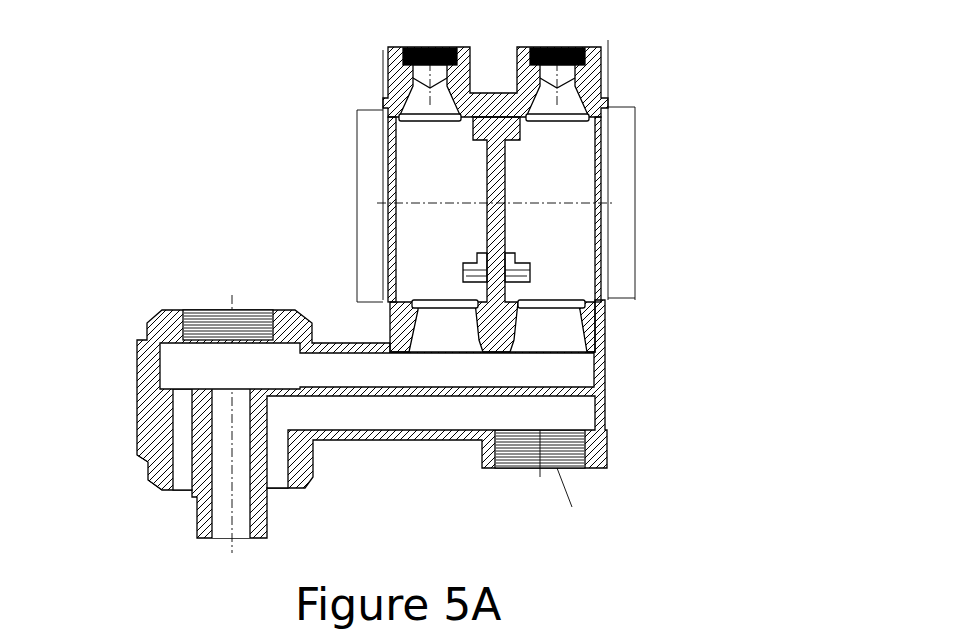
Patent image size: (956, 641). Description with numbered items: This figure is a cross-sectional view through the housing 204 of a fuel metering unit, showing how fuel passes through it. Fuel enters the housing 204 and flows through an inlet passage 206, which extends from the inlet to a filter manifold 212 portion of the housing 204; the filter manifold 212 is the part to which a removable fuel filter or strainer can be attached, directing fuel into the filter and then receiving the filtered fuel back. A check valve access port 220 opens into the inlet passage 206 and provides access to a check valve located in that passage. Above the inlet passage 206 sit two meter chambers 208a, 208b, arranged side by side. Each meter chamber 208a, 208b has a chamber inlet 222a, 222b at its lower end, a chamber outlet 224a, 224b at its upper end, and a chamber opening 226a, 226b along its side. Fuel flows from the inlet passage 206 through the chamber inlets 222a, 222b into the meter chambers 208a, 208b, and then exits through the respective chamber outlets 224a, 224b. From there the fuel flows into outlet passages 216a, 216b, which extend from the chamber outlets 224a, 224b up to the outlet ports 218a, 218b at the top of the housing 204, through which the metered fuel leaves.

The housing 204 is at (597, 388).
The inlet passage 206 is at (214, 377).
The meter chamber 208a is at (572, 172).
The meter chamber 208b is at (470, 176).
The filter manifold 212 is at (156, 423).
The outlet passage 216a is at (565, 81).
The outlet passage 216b is at (437, 92).
The outlet port 218a is at (552, 46).
The outlet port 218b is at (423, 46).
The check valve access port 220 is at (212, 313).
The chamber inlet 222a is at (560, 300).
The chamber inlet 222b is at (397, 318).
The chamber outlet 224a is at (576, 123).
The chamber outlet 224b is at (425, 128).
The chamber opening 226a is at (618, 208).
The chamber opening 226b is at (393, 199).